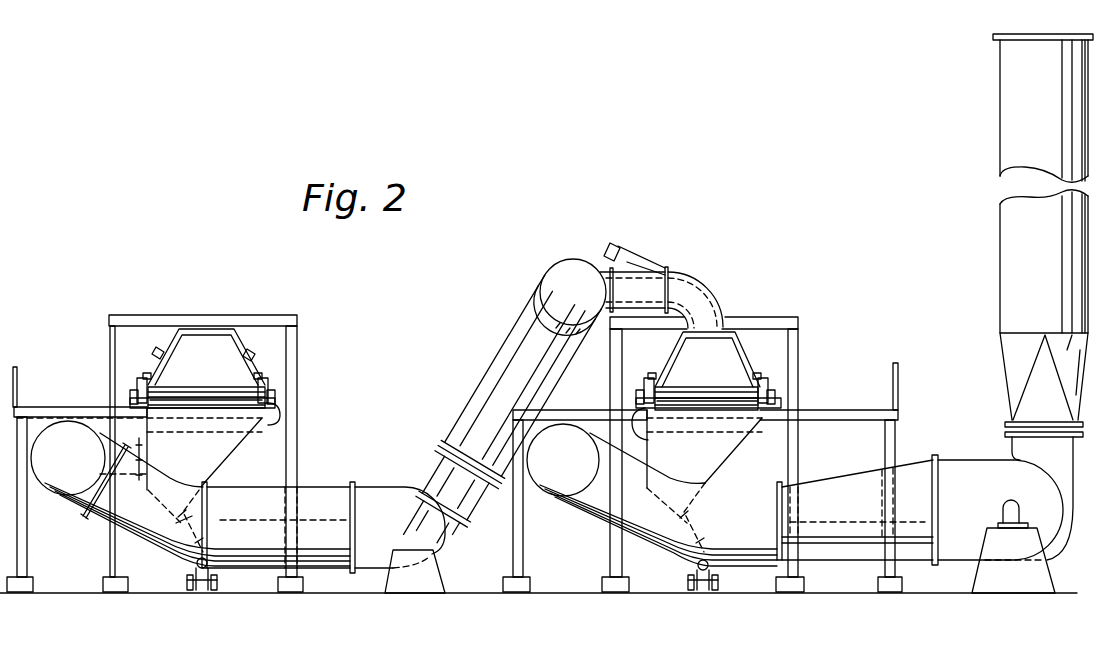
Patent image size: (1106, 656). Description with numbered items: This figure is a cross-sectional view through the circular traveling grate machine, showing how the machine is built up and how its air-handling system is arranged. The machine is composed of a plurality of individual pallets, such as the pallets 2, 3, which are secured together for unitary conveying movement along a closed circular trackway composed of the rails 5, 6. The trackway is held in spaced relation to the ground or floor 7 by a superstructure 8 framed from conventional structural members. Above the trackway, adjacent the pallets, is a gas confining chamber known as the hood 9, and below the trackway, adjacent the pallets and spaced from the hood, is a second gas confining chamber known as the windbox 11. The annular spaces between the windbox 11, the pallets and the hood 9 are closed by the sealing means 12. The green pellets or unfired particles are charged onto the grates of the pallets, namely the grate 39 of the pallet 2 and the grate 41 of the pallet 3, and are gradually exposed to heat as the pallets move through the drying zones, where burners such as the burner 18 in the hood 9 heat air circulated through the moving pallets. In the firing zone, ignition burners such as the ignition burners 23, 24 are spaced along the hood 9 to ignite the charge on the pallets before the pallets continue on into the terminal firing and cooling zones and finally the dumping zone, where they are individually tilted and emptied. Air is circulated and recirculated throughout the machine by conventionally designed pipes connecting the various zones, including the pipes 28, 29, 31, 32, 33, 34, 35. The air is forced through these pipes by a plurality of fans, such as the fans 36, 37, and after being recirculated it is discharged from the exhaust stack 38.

The pallet 2 is at (190, 377).
The pallet 3 is at (687, 380).
The rail 5 is at (135, 402).
The rail 6 is at (278, 425).
The ground or floor 7 is at (558, 592).
The superstructure 8 is at (306, 357).
The hood 9 is at (236, 346).
The windbox 11 is at (232, 448).
The sealing means 12 is at (140, 385).
The burner 18 is at (621, 247).
The ignition burner 23 is at (255, 356).
The ignition burner 24 is at (156, 347).
The pipe 28 is at (197, 502).
The pipe 29 is at (52, 420).
The pipe 31 is at (322, 487).
The pipe 32 is at (512, 332).
The pipe 33 is at (720, 296).
The pipe 34 is at (668, 520).
The pipe 35 is at (826, 478).
The fan 36 is at (412, 505).
The fan 37 is at (997, 472).
The exhaust stack 38 is at (999, 71).
The grate 39 is at (210, 396).
The grate 41 is at (710, 395).